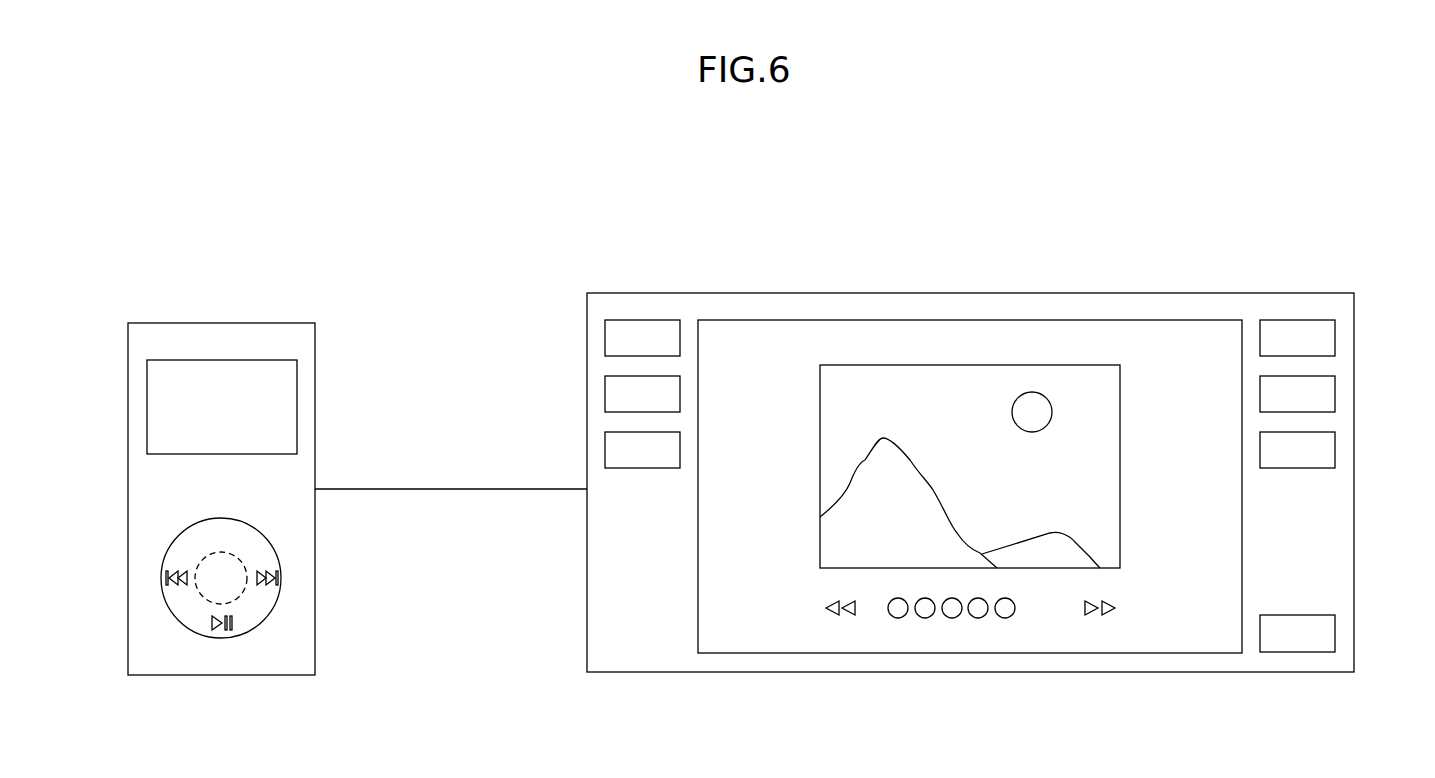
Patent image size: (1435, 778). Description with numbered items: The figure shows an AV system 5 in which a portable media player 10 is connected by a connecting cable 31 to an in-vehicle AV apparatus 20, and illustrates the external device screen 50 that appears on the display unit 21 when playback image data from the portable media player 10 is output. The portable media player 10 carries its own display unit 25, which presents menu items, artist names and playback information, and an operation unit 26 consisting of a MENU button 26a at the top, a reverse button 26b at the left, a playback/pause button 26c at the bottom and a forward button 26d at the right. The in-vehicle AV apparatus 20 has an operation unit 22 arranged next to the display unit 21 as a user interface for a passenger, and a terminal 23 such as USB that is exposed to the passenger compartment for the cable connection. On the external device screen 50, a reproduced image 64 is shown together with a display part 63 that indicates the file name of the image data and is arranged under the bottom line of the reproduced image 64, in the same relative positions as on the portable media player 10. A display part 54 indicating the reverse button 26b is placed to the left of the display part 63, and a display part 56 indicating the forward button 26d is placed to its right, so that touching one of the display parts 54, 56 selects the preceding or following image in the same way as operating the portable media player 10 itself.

The AV system 5 is at (440, 288).
The portable media player 10 is at (273, 323).
The in-vehicle AV apparatus 20 is at (843, 293).
The display unit 21 is at (767, 320).
The operation unit 22 is at (605, 450).
The terminal 23 is at (1335, 630).
The display unit 25 is at (217, 360).
The operation unit 26 is at (157, 537).
The MENU button 26a is at (222, 518).
The reverse button 26b is at (160, 578).
The playback/pause button 26c is at (222, 637).
The forward button 26d is at (282, 575).
The connecting cable 31 is at (422, 489).
The external device screen 50 is at (775, 623).
The display part 54 is at (837, 622).
The display part 56 is at (1098, 622).
The display part 63 is at (968, 623).
The reproduced image 64 is at (1122, 395).